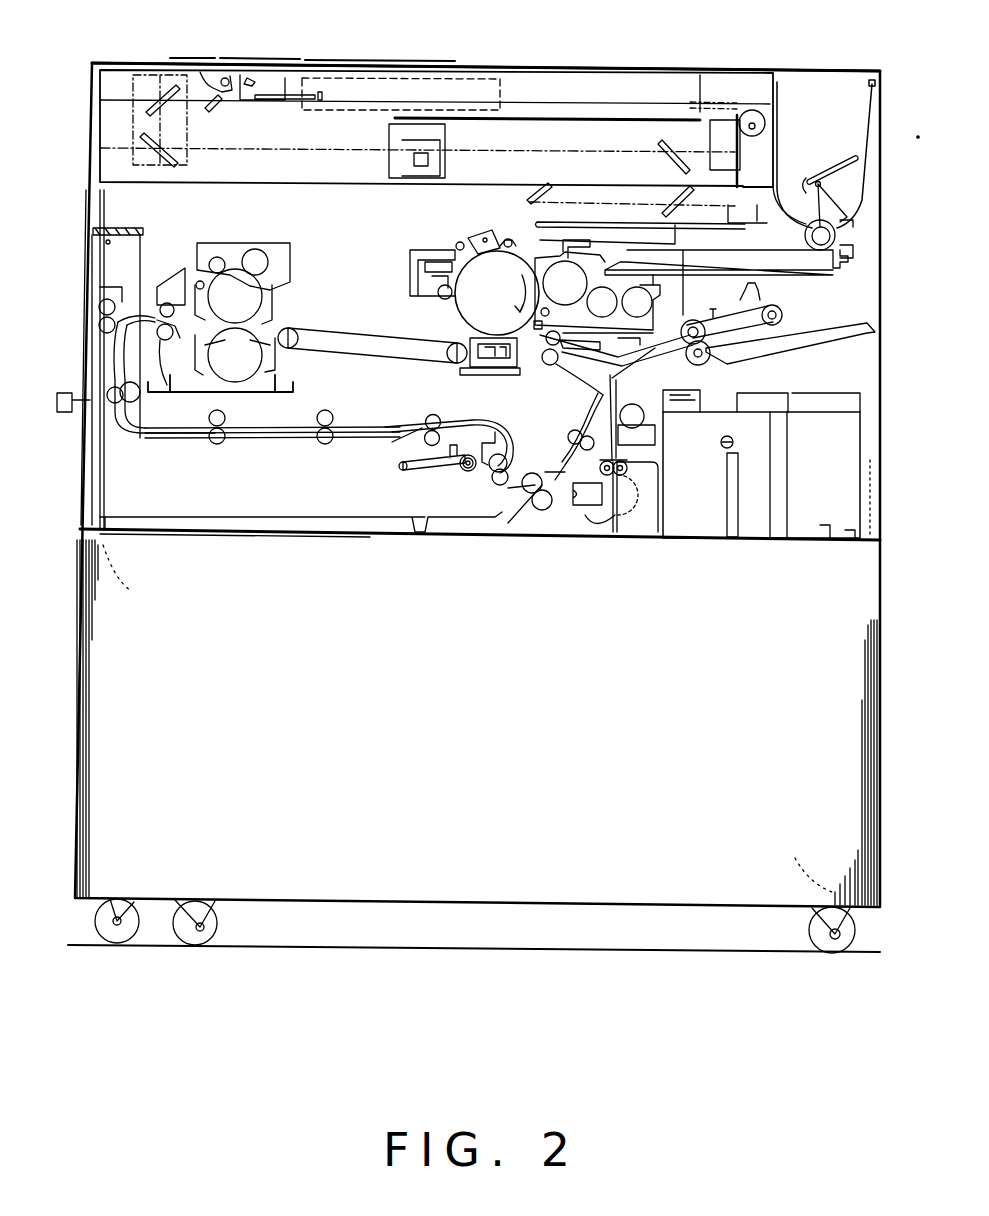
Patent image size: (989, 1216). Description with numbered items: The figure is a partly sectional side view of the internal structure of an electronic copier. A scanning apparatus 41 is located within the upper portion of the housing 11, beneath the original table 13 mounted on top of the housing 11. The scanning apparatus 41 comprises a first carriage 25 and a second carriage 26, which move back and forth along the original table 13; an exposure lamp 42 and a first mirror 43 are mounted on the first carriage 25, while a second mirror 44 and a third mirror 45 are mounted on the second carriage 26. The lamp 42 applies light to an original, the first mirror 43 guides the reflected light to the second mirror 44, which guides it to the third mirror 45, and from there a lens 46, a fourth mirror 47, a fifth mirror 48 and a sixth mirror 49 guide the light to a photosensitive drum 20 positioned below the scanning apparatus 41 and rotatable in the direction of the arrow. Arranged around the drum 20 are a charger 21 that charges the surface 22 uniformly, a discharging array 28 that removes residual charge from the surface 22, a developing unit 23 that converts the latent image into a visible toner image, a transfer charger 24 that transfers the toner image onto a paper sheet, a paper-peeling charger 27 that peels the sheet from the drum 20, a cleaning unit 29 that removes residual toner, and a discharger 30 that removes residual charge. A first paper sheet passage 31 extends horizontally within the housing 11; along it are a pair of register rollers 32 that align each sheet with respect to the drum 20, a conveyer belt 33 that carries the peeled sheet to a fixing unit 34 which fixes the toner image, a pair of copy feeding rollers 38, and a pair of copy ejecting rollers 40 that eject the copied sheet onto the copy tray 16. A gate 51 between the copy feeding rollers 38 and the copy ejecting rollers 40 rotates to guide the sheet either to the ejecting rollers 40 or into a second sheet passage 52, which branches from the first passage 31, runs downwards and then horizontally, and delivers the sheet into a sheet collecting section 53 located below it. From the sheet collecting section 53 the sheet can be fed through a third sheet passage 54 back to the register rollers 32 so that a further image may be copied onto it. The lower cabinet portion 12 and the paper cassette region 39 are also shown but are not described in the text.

The housing 11 is at (90, 184).
The lower cabinet 12 is at (88, 662).
The original table 13 is at (460, 64).
The copy tray 16 is at (72, 414).
The photosensitive drum 20 is at (460, 292).
The charger 21 is at (480, 232).
The surface 22 is at (597, 225).
The developing unit 23 is at (605, 270).
The transfer charger 24 is at (508, 368).
The first carriage 25 is at (283, 78).
The second carriage 26 is at (145, 120).
The paper-peeling charger 27 is at (480, 370).
The discharging array 28 is at (508, 238).
The cleaning unit 29 is at (410, 283).
The discharger 30 is at (450, 248).
The first paper sheet passage 31 is at (374, 426).
The register rollers 32 is at (560, 362).
The conveyer belt 33 is at (330, 346).
The fixing unit 34 is at (222, 250).
The copy feeding rollers 38 is at (185, 393).
The paper cassette 39 is at (838, 447).
The copy ejecting rollers 40 is at (99, 325).
The scanning apparatus 41 is at (305, 78).
The exposure lamp 42 is at (226, 76).
The first mirror 43 is at (220, 108).
The second mirror 44 is at (140, 78).
The third mirror 45 is at (140, 138).
The lens 46 is at (440, 148).
The fourth mirror 47 is at (688, 150).
The fifth mirror 48 is at (690, 205).
The sixth mirror 49 is at (548, 186).
The gate 51 is at (123, 315).
The second sheet passage 52 is at (260, 440).
The sheet collecting section 53 is at (305, 516).
The third sheet passage 54 is at (555, 460).